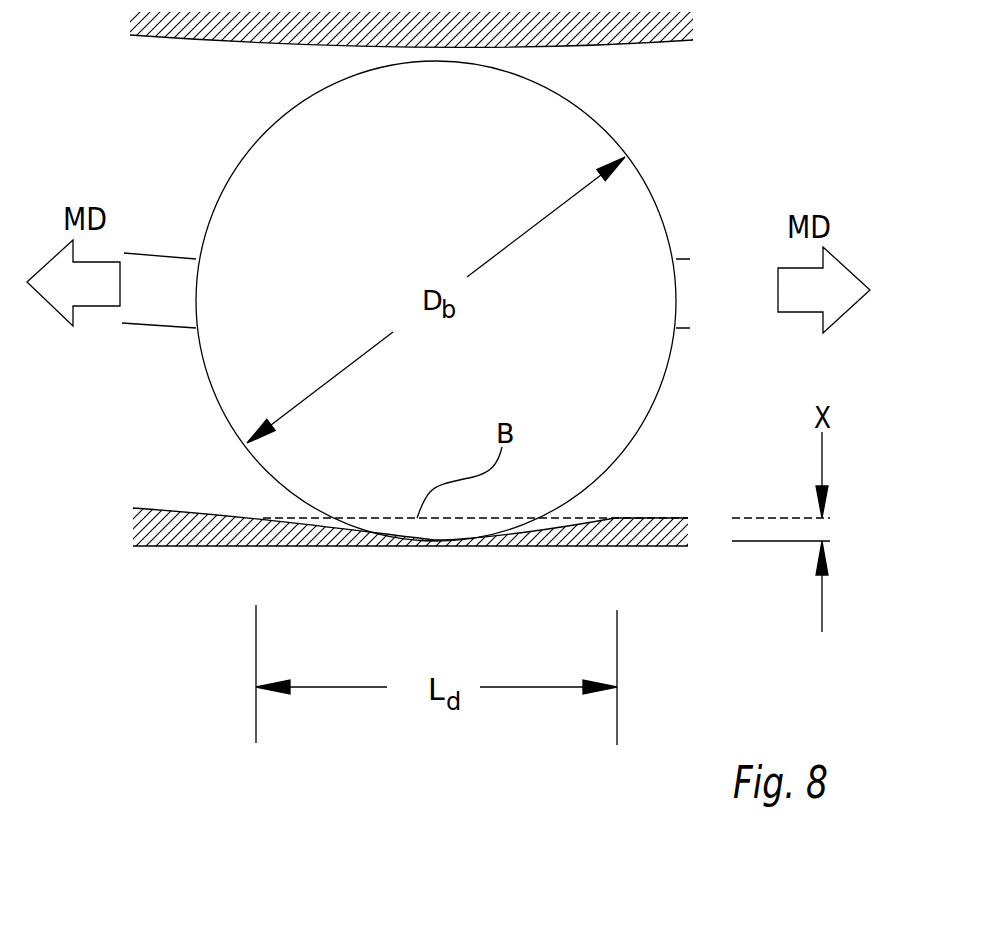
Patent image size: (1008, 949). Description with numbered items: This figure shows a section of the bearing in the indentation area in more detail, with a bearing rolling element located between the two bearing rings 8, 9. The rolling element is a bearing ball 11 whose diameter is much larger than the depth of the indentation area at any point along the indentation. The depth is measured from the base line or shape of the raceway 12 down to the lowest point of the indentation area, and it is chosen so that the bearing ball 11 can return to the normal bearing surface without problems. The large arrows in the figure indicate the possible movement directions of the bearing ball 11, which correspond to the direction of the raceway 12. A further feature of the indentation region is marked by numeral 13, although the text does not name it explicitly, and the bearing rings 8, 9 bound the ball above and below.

The bearing ring 8 is at (180, 37).
The bearing ring 9 is at (160, 513).
The bearing ball 11 is at (214, 347).
The raceway 12 is at (662, 408).
The depression 13 is at (565, 525).